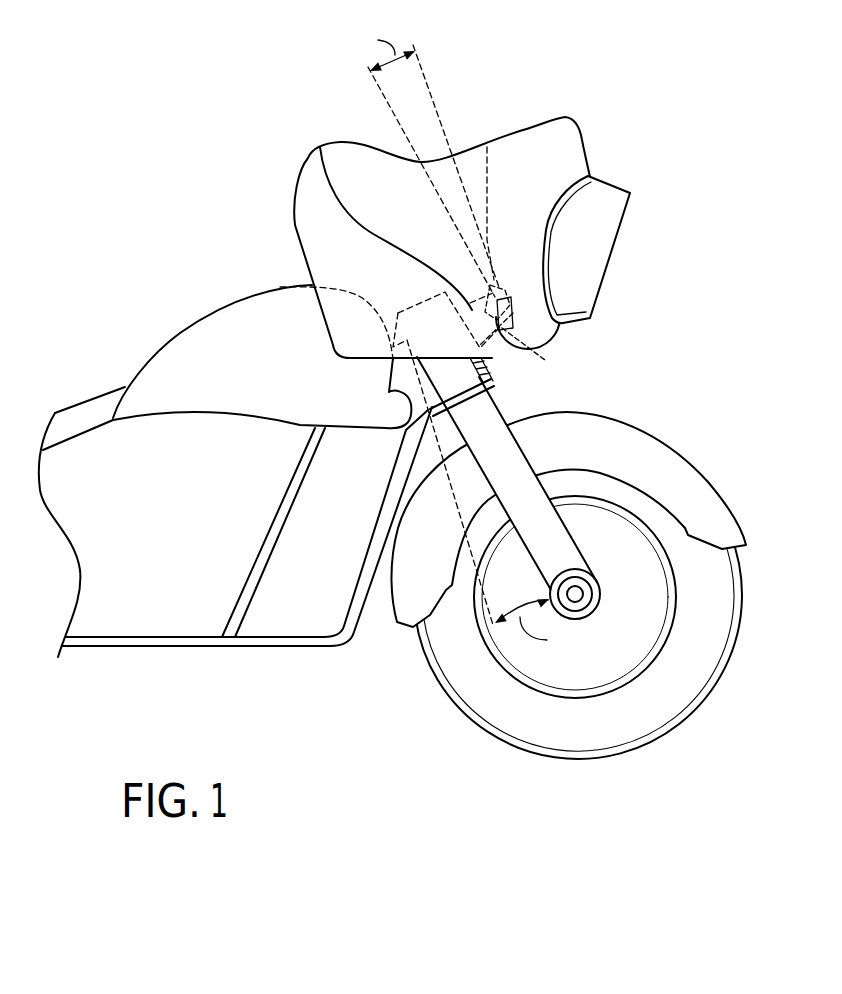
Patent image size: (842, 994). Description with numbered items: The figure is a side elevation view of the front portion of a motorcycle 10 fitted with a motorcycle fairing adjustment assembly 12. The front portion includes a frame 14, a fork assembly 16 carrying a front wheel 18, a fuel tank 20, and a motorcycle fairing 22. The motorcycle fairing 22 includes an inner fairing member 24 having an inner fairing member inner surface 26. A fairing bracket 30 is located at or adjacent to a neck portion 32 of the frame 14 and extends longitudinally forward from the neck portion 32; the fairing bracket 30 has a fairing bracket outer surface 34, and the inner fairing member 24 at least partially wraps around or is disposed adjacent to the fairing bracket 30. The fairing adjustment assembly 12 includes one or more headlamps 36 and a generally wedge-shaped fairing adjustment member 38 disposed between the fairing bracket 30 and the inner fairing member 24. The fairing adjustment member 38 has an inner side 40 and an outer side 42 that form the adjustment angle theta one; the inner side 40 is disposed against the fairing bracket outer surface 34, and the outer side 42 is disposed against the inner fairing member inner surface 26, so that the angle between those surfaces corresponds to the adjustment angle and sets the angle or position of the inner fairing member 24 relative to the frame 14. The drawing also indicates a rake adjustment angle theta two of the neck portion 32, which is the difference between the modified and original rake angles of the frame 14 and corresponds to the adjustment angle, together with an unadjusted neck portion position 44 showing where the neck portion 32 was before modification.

The motorcycle 10 is at (107, 205).
The motorcycle fairing adjustment assembly 12 is at (647, 135).
The frame 14 is at (388, 473).
The fork assembly 16 is at (533, 457).
The front wheel 18 is at (647, 578).
The fuel tank 20 is at (160, 383).
The motorcycle fairing 22 is at (619, 98).
The inner fairing member 24 is at (322, 222).
The inner fairing member inner surface 26 is at (520, 348).
The fairing bracket 30 is at (320, 147).
The neck portion 32 is at (414, 304).
The fairing bracket outer surface 34 is at (512, 378).
The headlamp 36 is at (598, 243).
The fairing adjustment member 38 is at (500, 300).
The inner side 40 is at (498, 368).
The outer side 42 is at (510, 315).
The unadjusted neck portion position 44 is at (440, 437).